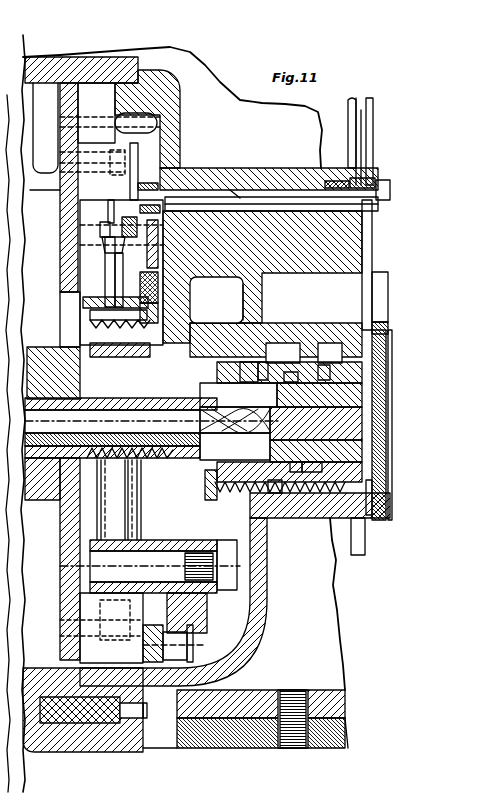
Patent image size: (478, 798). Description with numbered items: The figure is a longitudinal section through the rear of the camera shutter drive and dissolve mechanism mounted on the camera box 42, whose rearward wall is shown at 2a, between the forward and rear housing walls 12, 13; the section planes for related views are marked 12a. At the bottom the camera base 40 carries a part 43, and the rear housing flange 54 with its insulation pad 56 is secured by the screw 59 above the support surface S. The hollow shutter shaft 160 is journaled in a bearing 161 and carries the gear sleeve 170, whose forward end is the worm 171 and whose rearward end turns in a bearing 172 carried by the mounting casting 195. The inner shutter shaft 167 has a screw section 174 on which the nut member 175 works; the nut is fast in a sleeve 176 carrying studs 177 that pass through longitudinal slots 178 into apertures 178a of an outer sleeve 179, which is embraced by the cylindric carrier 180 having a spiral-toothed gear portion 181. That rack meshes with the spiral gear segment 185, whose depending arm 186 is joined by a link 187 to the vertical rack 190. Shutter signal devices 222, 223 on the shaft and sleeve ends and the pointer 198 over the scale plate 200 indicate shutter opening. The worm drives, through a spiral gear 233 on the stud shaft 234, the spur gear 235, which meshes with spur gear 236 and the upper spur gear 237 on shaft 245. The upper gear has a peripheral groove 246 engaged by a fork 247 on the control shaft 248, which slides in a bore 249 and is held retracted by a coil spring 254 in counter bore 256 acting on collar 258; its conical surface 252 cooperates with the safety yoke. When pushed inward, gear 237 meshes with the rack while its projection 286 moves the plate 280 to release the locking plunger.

The forward housing wall 12 is at (128, 38).
The rear housing wall 13 is at (187, 200).
The section line 12a- 12a is at (93, 658).
The camera box 42 is at (40, 57).
The housing wall portion 2a is at (63, 193).
The mounting casting 195 is at (278, 168).
The control shaft 248 is at (256, 174).
The bore 249 is at (264, 166).
The conical surfaces 252 is at (170, 188).
The plate 200 is at (348, 108).
The pointer 198 is at (396, 88).
The coil spring 254 is at (358, 180).
The counter bore 256 is at (352, 184).
The shaft collar 258 is at (374, 201).
The shaft 245 is at (264, 278).
The peripheral groove 246 is at (166, 276).
The spur gear 236 is at (156, 294).
The spur gear 235 is at (156, 305).
The spur gear 237 is at (231, 292).
The fork 247 is at (136, 223).
The rack 190 is at (122, 228).
The projection 286 is at (122, 256).
The plate 280 is at (118, 273).
The spiral gear 233 is at (85, 301).
The stud shaft 234 is at (89, 320).
The bearing 161 is at (30, 358).
The hollow shutter shaft 160 is at (30, 376).
The screw section 174 is at (200, 392).
The sleeve 176 is at (334, 372).
The shutter signal device 223 is at (362, 356).
The cylindric carrier 180 is at (302, 410).
The apertures 178a is at (264, 362).
The studs 177 is at (284, 374).
The nut member 175 is at (318, 365).
The bearing 172 is at (376, 358).
The shutter signal device 222 is at (392, 492).
The inner shutter shaft 167 is at (40, 422).
The worm 171 is at (119, 462).
The gear sleeve 170 is at (170, 462).
The spiral gear segment 185 is at (207, 486).
The longitudinal slots 178 is at (238, 364).
The sleeve 179 is at (314, 492).
The gear portion 181 is at (268, 520).
The depending arm 186 is at (180, 612).
The link 187 is at (174, 624).
The camera base 40 is at (62, 751).
The bolt 43 is at (38, 738).
The flange 54 is at (332, 704).
The insulation pad 56 is at (232, 750).
The screw 59 is at (292, 750).
The support surface S is at (343, 750).